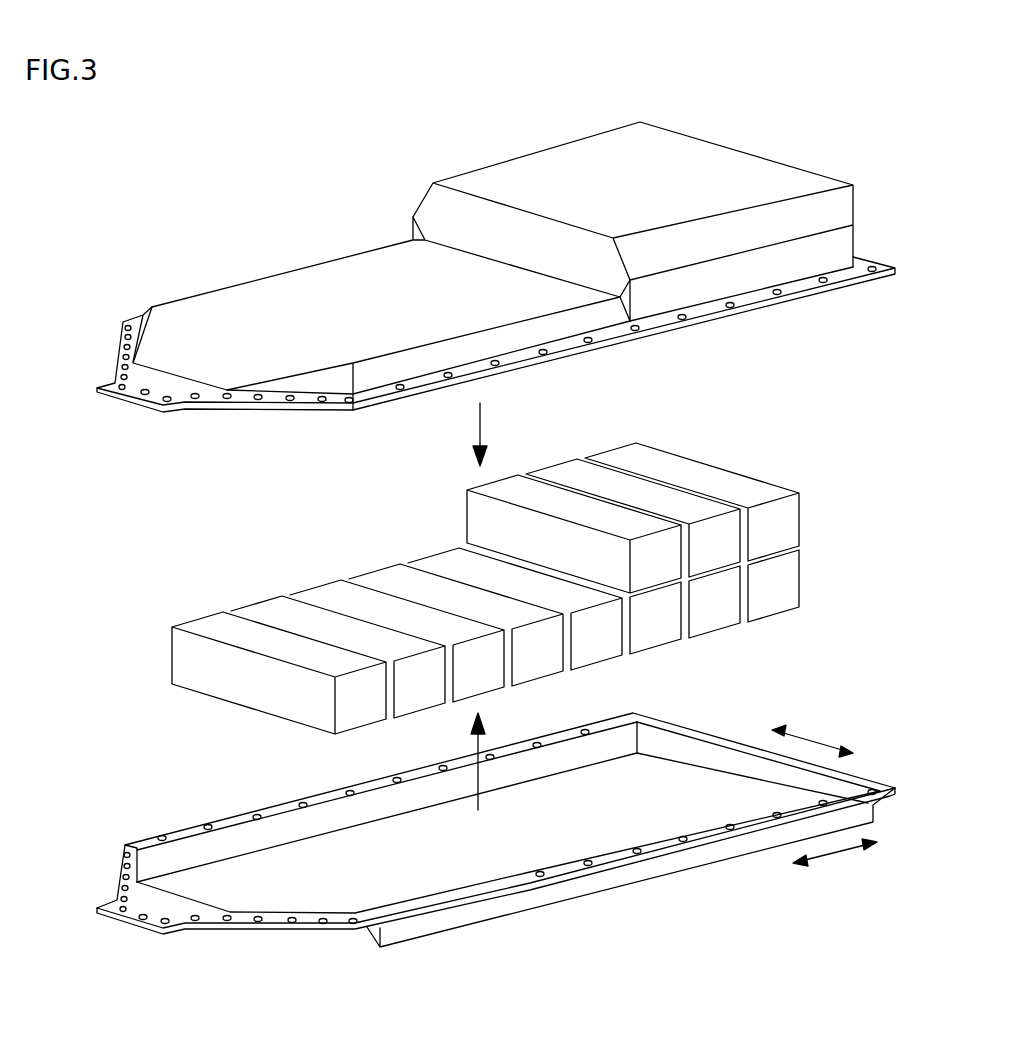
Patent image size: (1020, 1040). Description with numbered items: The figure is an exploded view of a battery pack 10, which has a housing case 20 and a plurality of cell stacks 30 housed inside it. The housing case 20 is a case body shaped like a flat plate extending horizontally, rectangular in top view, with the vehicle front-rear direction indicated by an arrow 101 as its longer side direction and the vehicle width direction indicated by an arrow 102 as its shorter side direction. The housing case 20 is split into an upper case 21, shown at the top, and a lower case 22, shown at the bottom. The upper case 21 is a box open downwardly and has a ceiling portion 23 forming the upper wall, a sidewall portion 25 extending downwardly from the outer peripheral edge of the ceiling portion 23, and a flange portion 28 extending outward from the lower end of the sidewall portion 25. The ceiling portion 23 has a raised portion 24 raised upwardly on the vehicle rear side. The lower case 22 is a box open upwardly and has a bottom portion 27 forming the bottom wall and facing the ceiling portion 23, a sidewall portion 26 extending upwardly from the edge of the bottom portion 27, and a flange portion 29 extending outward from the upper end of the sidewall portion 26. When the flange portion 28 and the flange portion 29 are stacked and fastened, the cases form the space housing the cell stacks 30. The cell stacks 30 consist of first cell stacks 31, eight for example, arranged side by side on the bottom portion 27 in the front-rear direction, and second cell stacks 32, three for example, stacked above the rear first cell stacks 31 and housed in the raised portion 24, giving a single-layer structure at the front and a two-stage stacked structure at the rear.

The battery pack 10 is at (830, 132).
The housing case 20 is at (66, 540).
The upper case 21 is at (111, 456).
The lower case 22 is at (107, 866).
The ceiling portion 23 is at (305, 292).
The raised portion 24 is at (644, 147).
The sidewall portion 25 is at (545, 326).
The sidewall portion 26 is at (580, 886).
The bottom portion 27 is at (422, 862).
The flange portion 28 is at (795, 290).
The flange portion 29 is at (658, 845).
The cell stacks 30 is at (490, 582).
The first cell stacks 31 is at (267, 688).
The second cell stacks 32 is at (540, 502).
The arrow 101 is at (842, 858).
The arrow 102 is at (826, 742).